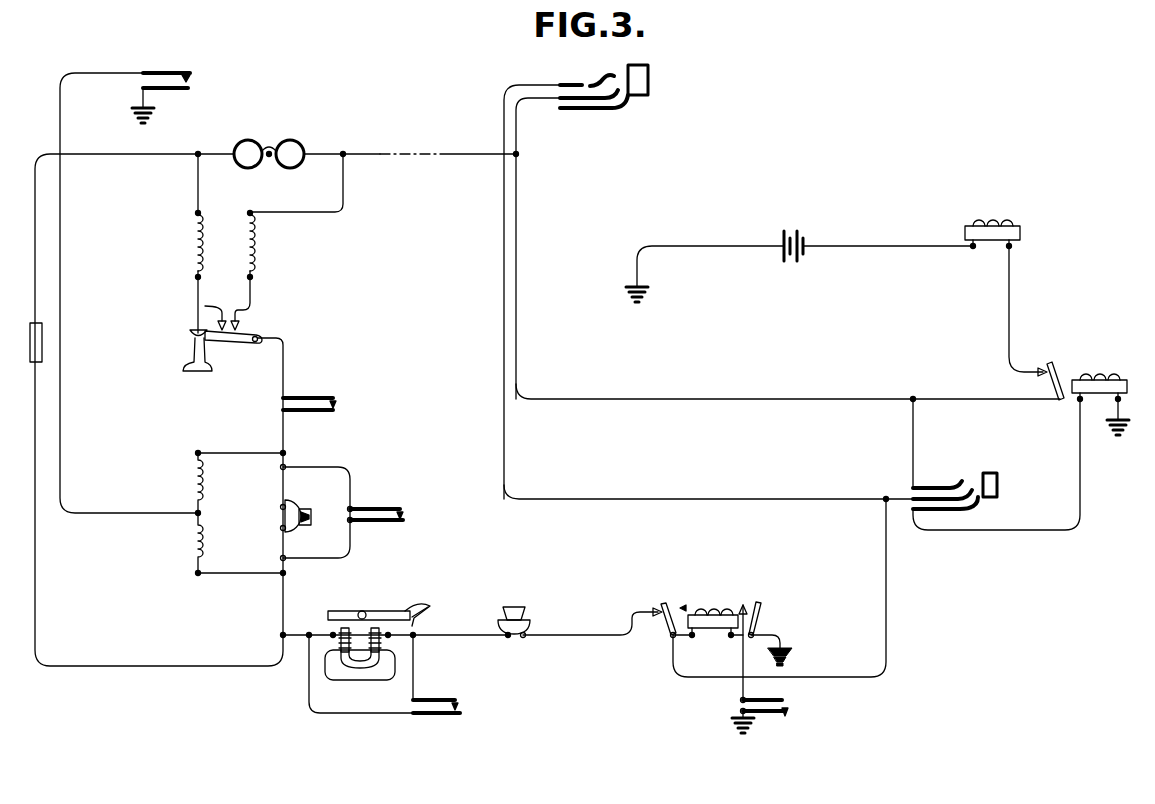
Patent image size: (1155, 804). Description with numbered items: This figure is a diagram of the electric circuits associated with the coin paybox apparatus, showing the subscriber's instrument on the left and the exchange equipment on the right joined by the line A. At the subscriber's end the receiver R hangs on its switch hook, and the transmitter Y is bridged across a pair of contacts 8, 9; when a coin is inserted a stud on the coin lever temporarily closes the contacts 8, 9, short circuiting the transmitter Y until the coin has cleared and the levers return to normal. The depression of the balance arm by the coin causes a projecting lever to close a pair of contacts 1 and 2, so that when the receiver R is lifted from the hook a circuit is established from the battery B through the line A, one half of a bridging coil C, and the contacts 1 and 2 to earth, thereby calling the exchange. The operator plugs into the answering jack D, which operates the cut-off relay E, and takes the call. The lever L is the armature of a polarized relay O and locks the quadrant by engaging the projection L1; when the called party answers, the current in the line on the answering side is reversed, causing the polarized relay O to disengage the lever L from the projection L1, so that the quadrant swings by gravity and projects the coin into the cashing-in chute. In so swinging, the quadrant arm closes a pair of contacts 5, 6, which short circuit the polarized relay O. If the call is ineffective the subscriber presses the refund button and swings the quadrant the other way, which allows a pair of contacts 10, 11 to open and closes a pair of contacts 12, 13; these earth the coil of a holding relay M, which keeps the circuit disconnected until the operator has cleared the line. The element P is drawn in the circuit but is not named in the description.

The contact 1 is at (184, 74).
The contact 2 is at (186, 90).
The contact 5 is at (455, 700).
The contact 6 is at (460, 713).
The contact 8 is at (400, 509).
The contact 9 is at (403, 520).
The contact 10 is at (333, 398).
The contact 11 is at (333, 410).
The contact 12 is at (782, 702).
The contact 13 is at (785, 712).
The line A is at (433, 152).
The battery B is at (785, 240).
The bridging coil C is at (193, 472).
The answering jack D is at (957, 480).
The cut-off relay E is at (1124, 380).
The lever L is at (308, 630).
The projection L1 is at (418, 624).
The holding relay M is at (718, 615).
The polarized relay O is at (365, 665).
The transmitter P is at (515, 610).
The receiver R is at (192, 350).
The transmitter Y is at (290, 532).